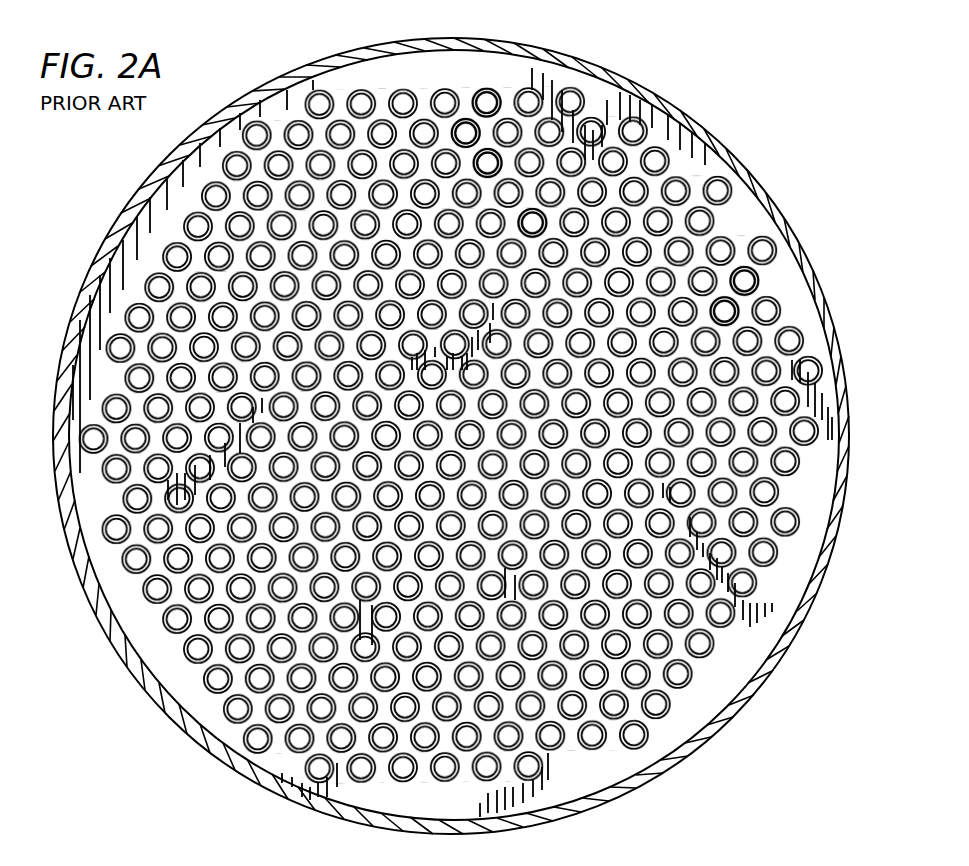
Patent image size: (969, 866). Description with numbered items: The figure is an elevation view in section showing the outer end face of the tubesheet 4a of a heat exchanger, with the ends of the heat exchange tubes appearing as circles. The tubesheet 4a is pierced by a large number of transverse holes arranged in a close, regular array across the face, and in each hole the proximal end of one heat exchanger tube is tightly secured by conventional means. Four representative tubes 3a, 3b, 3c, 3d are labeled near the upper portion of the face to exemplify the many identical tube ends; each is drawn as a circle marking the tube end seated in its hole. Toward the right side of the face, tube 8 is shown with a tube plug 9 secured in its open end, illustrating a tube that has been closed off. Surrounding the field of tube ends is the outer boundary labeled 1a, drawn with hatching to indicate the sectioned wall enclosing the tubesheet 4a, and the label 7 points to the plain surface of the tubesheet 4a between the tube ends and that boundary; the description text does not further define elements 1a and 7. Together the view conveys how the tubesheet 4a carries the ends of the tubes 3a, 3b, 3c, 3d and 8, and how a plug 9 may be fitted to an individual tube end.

The shell 1a is at (115, 232).
The tube sheet 7 is at (452, 70).
The heat exchanger tube 3a is at (486, 103).
The heat exchanger tube 3b is at (466, 133).
The heat exchanger tube 3c is at (488, 163).
The heat exchanger tube 3d is at (532, 223).
The tubesheet 4a is at (735, 207).
The tube 8 is at (745, 281).
The tube plug 9 is at (725, 311).